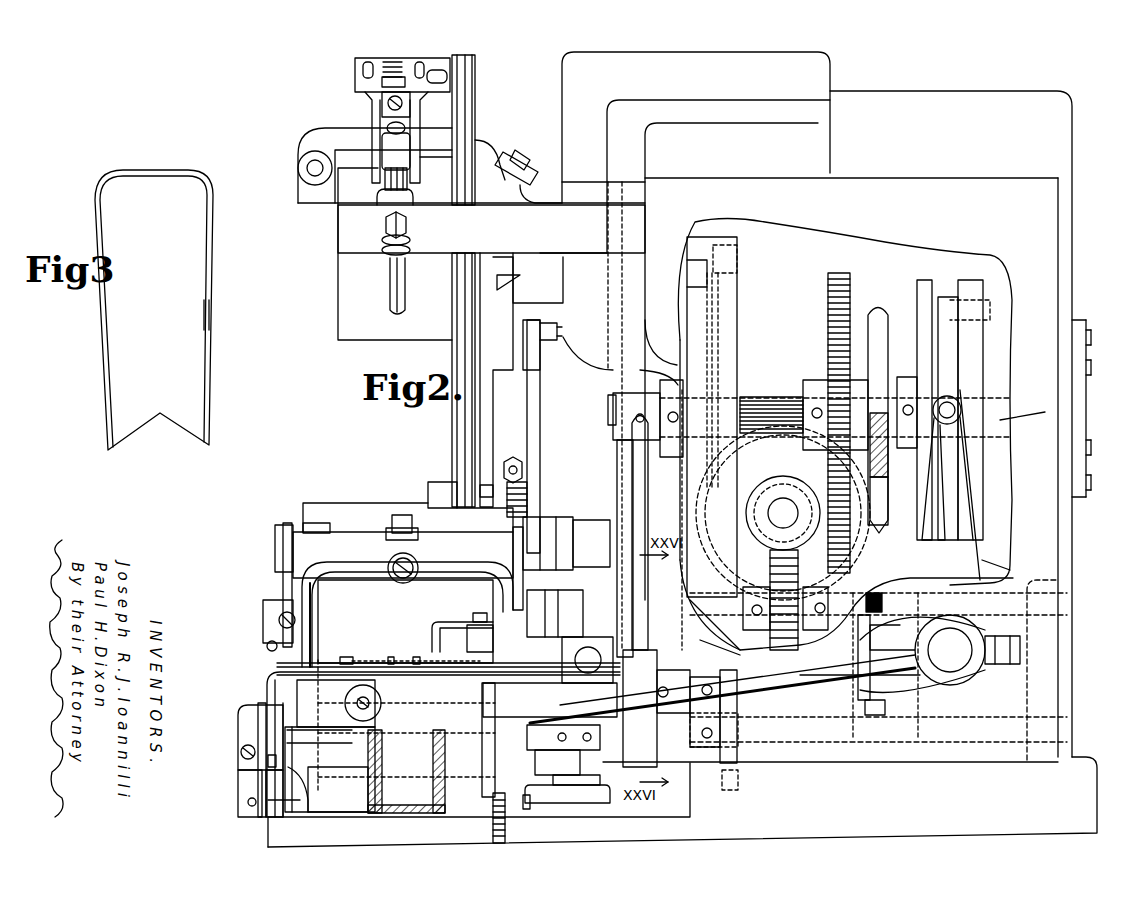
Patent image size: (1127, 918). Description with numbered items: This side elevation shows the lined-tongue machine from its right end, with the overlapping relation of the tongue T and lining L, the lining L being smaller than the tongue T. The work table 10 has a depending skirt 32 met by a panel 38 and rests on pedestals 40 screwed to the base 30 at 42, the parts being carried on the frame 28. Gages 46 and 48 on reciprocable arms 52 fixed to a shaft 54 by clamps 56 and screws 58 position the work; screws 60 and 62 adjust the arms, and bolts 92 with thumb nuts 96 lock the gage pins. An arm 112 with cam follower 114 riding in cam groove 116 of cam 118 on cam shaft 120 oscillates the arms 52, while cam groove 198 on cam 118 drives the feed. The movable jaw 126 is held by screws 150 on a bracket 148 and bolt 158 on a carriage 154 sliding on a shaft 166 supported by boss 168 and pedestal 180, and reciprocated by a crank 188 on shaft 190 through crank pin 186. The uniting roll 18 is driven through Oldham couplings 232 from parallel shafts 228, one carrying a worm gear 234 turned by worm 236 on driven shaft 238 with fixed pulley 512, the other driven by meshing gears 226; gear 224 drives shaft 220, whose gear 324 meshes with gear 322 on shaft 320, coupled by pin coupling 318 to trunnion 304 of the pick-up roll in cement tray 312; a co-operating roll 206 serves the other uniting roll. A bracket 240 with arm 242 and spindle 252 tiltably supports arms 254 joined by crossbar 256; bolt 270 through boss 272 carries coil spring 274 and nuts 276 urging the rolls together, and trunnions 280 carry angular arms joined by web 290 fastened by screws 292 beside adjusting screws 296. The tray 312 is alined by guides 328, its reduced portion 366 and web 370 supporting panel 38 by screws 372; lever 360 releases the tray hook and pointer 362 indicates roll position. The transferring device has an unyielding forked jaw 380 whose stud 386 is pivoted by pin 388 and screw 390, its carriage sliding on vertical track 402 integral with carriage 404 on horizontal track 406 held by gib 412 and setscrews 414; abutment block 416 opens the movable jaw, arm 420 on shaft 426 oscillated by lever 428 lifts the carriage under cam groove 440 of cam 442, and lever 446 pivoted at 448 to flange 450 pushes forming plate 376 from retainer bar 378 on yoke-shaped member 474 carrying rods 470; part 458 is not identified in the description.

In FIG. 3, the tongue T is at (213, 288).
In FIG. 3, the lining L is at (205, 324).
In FIG. 2, the work table 10 is at (277, 665).
In FIG. 2, the work uniting roll 18 is at (400, 630).
In FIG. 2, the frame 28 is at (1058, 548).
In FIG. 2, the base 30 is at (682, 802).
In FIG. 2, the skirt portions 32 is at (267, 683).
In FIG. 2, the panel 38 is at (258, 773).
In FIG. 2, the pedestals 40 is at (445, 800).
In FIG. 2, the screws 42 is at (493, 823).
In FIG. 2, the gages 46 is at (348, 657).
In FIG. 2, the gages 48 is at (416, 657).
In FIG. 2, the reciprocable arms 52 is at (553, 751).
In FIG. 2, the shaft 54 is at (960, 660).
In FIG. 2, the clamps 56 is at (884, 707).
In FIG. 2, the screws 58 is at (1022, 648).
In FIG. 2, the screws 60 is at (882, 598).
In FIG. 2, the screws 62 is at (860, 698).
In FIG. 2, the bolts 92 is at (368, 707).
In FIG. 2, the knurled thumb nuts 96 is at (381, 700).
In FIG. 2, the arm 112 is at (982, 560).
In FIG. 2, the cam follower 114 is at (955, 410).
In FIG. 2, the cam groove 116 is at (947, 300).
In FIG. 2, the cam 118 is at (915, 290).
In FIG. 2, the cam shaft 120 is at (592, 402).
In FIG. 2, the movable jaw 126 is at (434, 620).
In FIG. 2, the bracket 148 is at (493, 640).
In FIG. 2, the screws 150 is at (480, 612).
In FIG. 2, the carriage 154 is at (600, 580).
In FIG. 2, the bolt 158 is at (565, 590).
In FIG. 2, the shaft 166 is at (577, 657).
In FIG. 2, the boss 168 is at (578, 725).
In FIG. 2, the pedestal 180 is at (550, 700).
In FIG. 2, the crank pin 186 is at (734, 644).
In FIG. 2, the crank 188 is at (645, 515).
In FIG. 2, the shaft 190 is at (608, 398).
In FIG. 2, the cam groove 198 is at (992, 318).
In FIG. 2, the roll 206 is at (266, 646).
In FIG. 2, the shaft 220 is at (737, 688).
In FIG. 2, the gear 224 is at (695, 699).
In FIG. 2, the meshing gears 226 is at (750, 640).
In FIG. 2, the parallel shafts 228 is at (770, 575).
In FIG. 2, the Oldham couplings 232 is at (542, 570).
In FIG. 2, the worm gear 234 is at (790, 575).
In FIG. 2, the worm 236 is at (765, 495).
In FIG. 2, the driven shaft 238 is at (788, 500).
In FIG. 2, the bracket 240 is at (612, 425).
In FIG. 2, the horizontal arm 242 is at (345, 503).
In FIG. 2, the spindle 252 is at (275, 546).
In FIG. 2, the arms 254 is at (283, 582).
In FIG. 2, the crossbar 256 is at (345, 540).
In FIG. 2, the bolt 270 is at (512, 458).
In FIG. 2, the boss 272 is at (520, 465).
In FIG. 2, the coil spring 274 is at (528, 497).
In FIG. 2, the nuts 276 is at (488, 482).
In FIG. 2, the trunnions 280 is at (263, 618).
In FIG. 2, the web 290 is at (322, 575).
In FIG. 2, the screws 292 is at (388, 565).
In FIG. 2, the adjusting screws 296 is at (400, 514).
In FIG. 2, the trunnion 304 is at (563, 766).
In FIG. 2, the cement tray 312 is at (275, 805).
In FIG. 2, the pin coupling 318 is at (578, 793).
In FIG. 2, the shaft 320 is at (765, 765).
In FIG. 2, the gear 322 is at (720, 778).
In FIG. 2, the gear 324 is at (760, 700).
In FIG. 2, the guides 328 is at (270, 790).
In FIG. 2, the lever 360 is at (240, 787).
In FIG. 2, the pointer 362 is at (238, 722).
In FIG. 2, the reduced portion 366 is at (380, 800).
In FIG. 2, the web 370 is at (305, 800).
In FIG. 2, the screws 372 is at (268, 752).
In FIG. 2, the work forming plate 376 is at (338, 238).
In FIG. 2, the retainer bar 378 is at (390, 288).
In FIG. 2, the unyielding forked jaw 380 is at (408, 185).
In FIG. 2, the stud 386 is at (405, 130).
In FIG. 2, the pin 388 is at (378, 168).
In FIG. 2, the screw 390 is at (380, 108).
In FIG. 2, the vertical track 402 is at (452, 410).
In FIG. 2, the carriage 404 is at (495, 150).
In FIG. 2, the horizontal track 406 is at (541, 192).
In FIG. 2, the gib 412 is at (540, 170).
In FIG. 2, the setscrews 414 is at (520, 160).
In FIG. 2, the abutment block 416 is at (434, 482).
In FIG. 2, the arm 420 is at (385, 205).
In FIG. 2, the shaft 426 is at (845, 585).
In FIG. 2, the lever 428 is at (826, 298).
In FIG. 2, the cam groove 440 is at (737, 250).
In FIG. 2, the cam 442 is at (722, 240).
In FIG. 2, the lever 446 is at (541, 380).
In FIG. 2, the pivot 448 is at (558, 330).
In FIG. 2, the flange 450 is at (521, 380).
In FIG. 2, the slab 458 is at (688, 245).
In FIG. 2, the parallel rods 470 is at (298, 168).
In FIG. 2, the yoke-shaped member 474 is at (335, 128).
In FIG. 2, the fixed pulley 512 is at (760, 430).